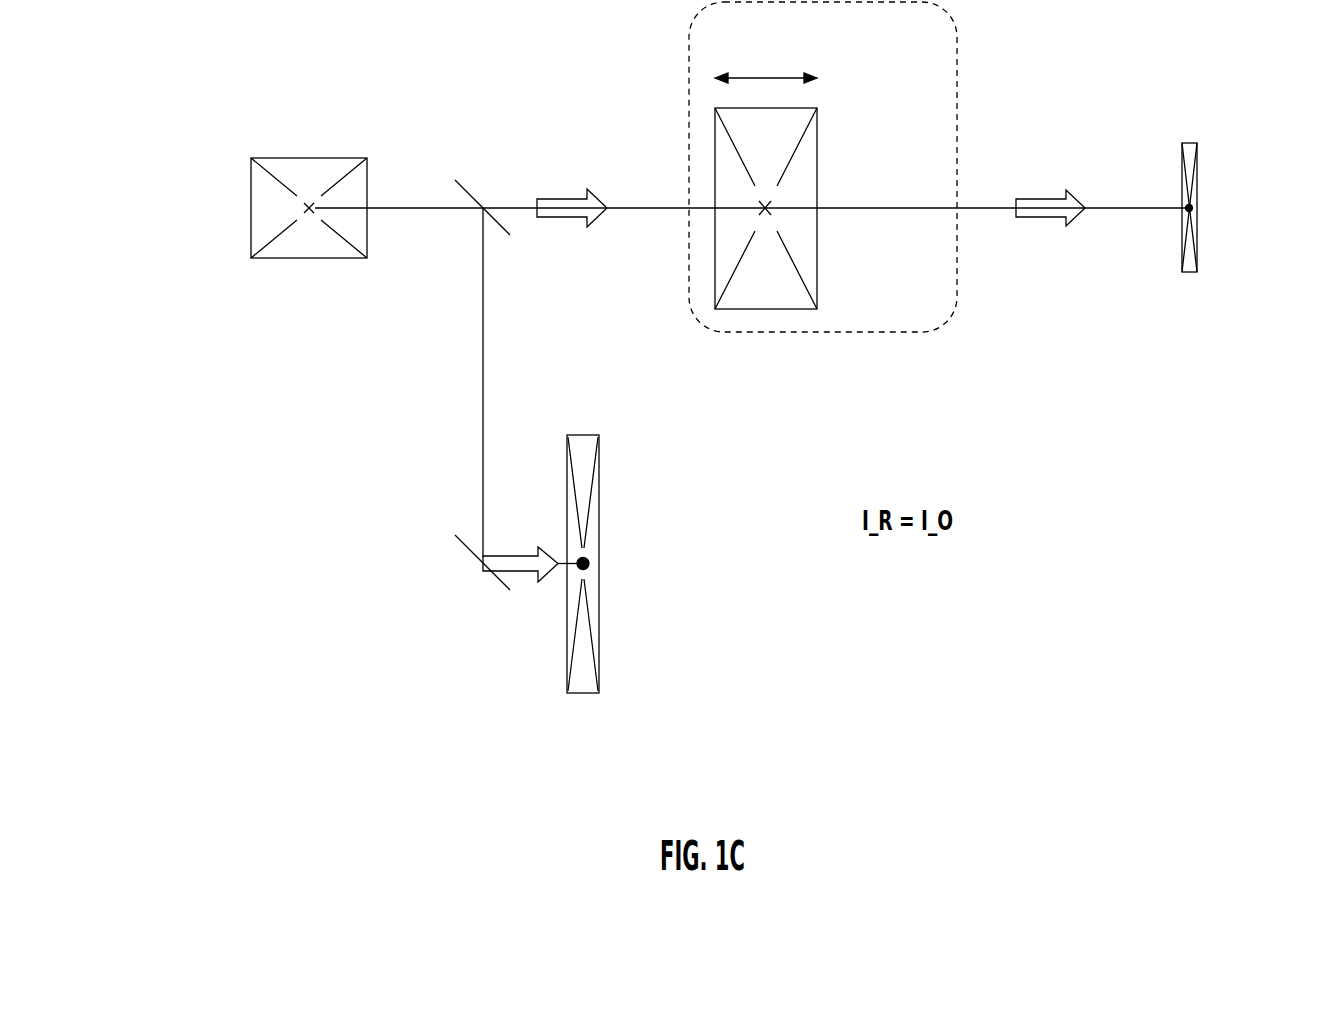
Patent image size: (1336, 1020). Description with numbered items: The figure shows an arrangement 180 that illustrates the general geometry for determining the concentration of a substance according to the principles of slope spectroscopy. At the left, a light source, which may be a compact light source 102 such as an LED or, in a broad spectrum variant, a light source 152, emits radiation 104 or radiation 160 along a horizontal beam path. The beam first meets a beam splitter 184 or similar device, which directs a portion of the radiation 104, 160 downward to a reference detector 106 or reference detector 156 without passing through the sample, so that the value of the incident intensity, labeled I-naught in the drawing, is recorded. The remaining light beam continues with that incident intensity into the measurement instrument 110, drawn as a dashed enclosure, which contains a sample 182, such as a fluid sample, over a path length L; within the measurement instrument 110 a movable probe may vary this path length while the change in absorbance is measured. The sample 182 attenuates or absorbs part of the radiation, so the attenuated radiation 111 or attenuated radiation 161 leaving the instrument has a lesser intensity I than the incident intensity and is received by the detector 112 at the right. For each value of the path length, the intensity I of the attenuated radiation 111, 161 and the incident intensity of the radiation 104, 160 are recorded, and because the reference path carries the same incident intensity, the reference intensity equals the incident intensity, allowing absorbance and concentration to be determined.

The compact light source 102 is at (253, 186).
The light source 152 is at (251, 212).
The beam splitter 184 is at (465, 189).
The radiation 104 is at (657, 387).
The radiation 160 is at (587, 224).
The measurement instrument 110 is at (957, 68).
The sample 182 is at (817, 155).
The attenuated radiation 111 is at (1085, 179).
The attenuated radiation 161 is at (1041, 199).
The detector 112 is at (1197, 195).
The reference detector 106 is at (622, 599).
The reference detector 156 is at (593, 600).
The arrangement 180 is at (840, 798).